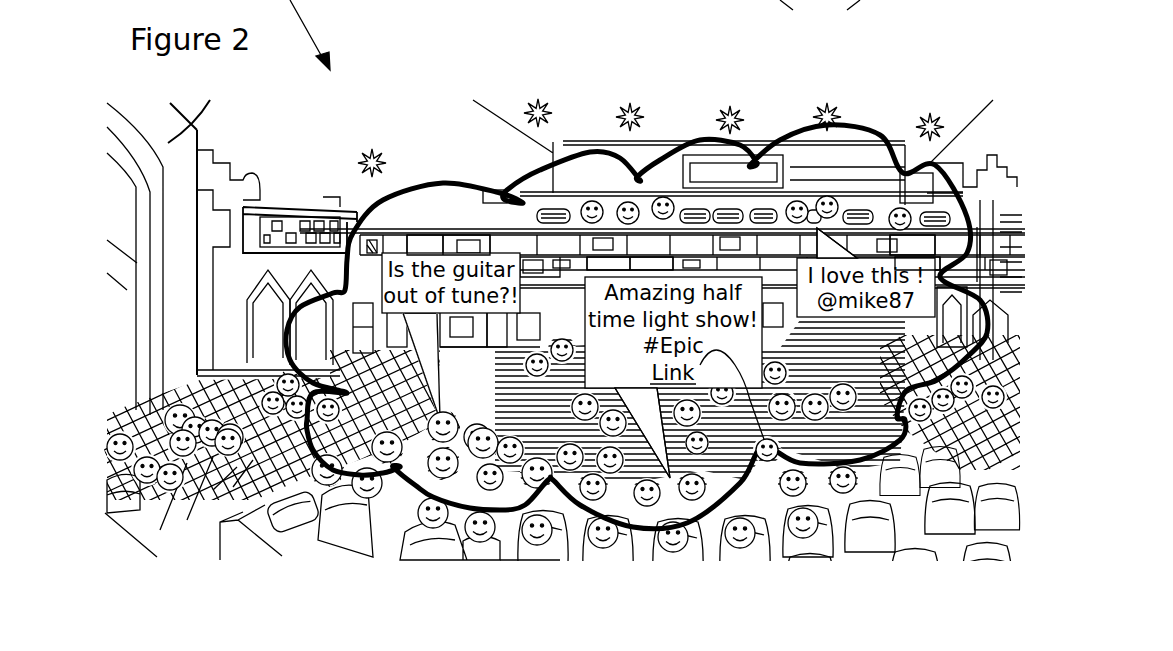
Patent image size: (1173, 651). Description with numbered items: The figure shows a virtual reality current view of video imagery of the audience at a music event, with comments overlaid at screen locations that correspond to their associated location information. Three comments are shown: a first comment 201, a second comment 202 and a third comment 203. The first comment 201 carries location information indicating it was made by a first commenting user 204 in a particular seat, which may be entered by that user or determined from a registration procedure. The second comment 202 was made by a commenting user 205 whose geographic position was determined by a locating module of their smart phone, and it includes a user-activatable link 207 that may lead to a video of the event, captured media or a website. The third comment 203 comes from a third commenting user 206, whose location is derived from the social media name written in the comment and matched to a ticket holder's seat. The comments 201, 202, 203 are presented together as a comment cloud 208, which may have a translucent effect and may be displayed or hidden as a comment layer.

The first comment 201 is at (440, 252).
The second comment 202 is at (643, 277).
The third comment 203 is at (918, 270).
The first commenting user 204 is at (403, 450).
The commenting user 205 is at (680, 493).
The third commenting user 206 is at (817, 200).
The user-activatable link 207 is at (765, 485).
The comment cloud 208 is at (980, 228).